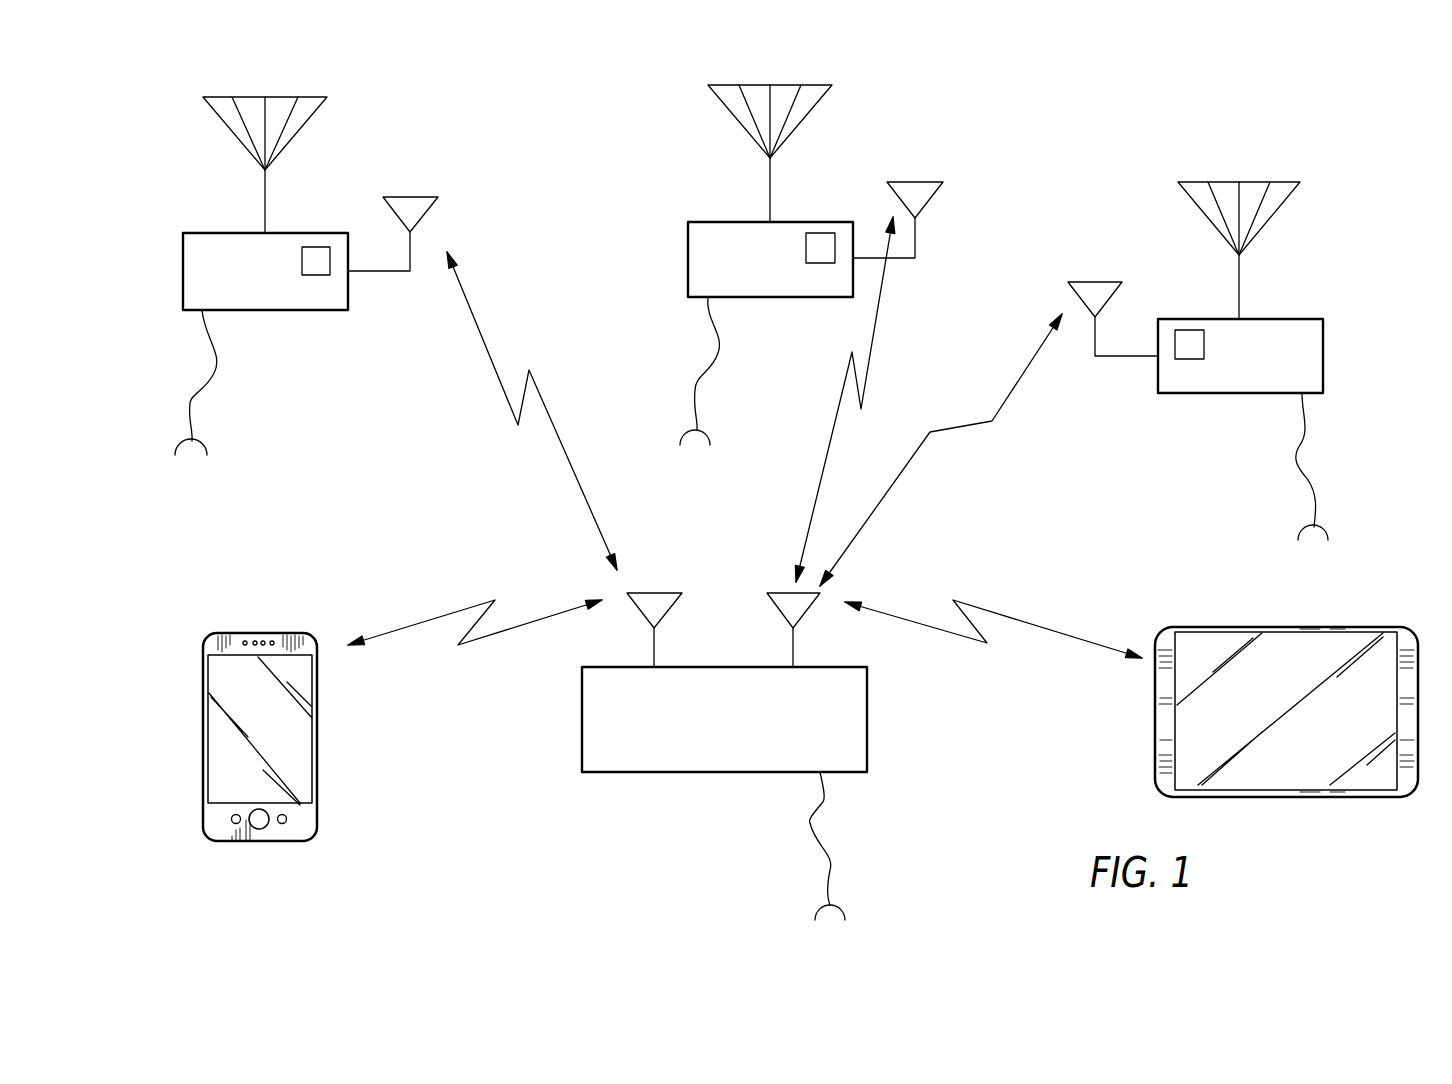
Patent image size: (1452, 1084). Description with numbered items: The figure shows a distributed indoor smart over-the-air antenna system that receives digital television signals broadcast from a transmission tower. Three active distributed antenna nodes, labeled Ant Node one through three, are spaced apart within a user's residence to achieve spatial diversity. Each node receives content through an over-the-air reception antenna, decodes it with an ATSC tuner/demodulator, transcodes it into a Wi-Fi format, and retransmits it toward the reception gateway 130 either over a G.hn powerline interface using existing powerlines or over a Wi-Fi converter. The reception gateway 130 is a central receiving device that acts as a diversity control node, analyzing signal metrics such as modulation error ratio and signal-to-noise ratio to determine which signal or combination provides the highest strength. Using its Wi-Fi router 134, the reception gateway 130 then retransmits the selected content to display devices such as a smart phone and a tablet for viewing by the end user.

The reception gateway 130 is at (608, 772).
The Wi-Fi router 134 is at (777, 610).